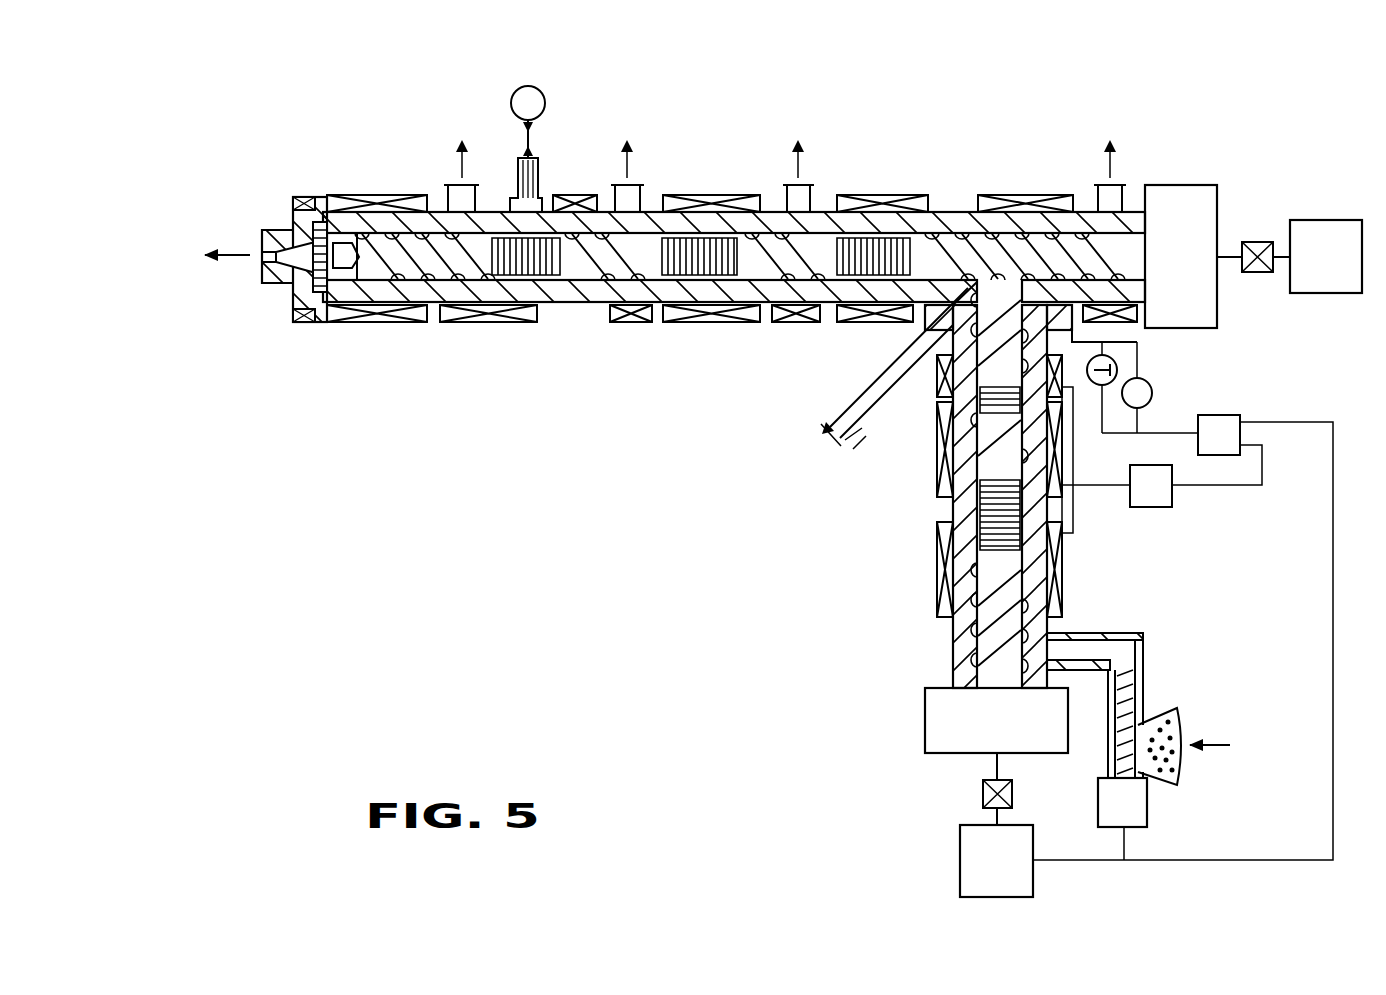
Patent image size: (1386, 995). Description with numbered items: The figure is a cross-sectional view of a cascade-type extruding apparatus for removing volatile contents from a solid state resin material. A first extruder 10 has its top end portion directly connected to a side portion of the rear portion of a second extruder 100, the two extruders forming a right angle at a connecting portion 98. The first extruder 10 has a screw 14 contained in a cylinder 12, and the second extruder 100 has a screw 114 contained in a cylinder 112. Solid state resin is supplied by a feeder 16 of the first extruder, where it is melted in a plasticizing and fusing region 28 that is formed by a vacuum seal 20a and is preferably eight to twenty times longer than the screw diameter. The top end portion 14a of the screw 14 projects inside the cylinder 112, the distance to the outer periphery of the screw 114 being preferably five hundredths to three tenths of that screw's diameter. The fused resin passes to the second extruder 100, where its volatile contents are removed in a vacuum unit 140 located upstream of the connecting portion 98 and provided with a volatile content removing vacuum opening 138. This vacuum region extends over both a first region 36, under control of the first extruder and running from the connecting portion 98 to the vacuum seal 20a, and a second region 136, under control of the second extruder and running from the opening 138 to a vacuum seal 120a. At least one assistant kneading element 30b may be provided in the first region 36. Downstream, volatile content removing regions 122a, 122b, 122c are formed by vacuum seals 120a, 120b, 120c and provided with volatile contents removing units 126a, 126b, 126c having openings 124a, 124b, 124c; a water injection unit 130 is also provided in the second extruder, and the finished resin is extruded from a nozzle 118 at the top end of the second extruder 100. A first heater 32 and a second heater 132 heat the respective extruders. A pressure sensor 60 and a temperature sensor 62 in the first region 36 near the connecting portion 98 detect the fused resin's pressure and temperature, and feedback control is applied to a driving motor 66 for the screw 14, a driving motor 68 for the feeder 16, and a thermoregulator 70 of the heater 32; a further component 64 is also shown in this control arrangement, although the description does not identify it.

The first extruder 10 is at (816, 614).
The cylinder 12 is at (955, 630).
The screw 14 is at (975, 634).
The top end portion 14a is at (1004, 232).
The feeder 16 is at (1197, 704).
The vacuum seal 20a is at (1024, 540).
The plasticizing and fusing region 28 is at (1048, 578).
The assistant kneading element 30b is at (966, 430).
The first heater 32 is at (945, 545).
The first region 36 is at (1068, 318).
The pressure sensor 60 is at (1153, 393).
The temperature sensor 62 is at (1096, 384).
The controller 64 is at (1226, 417).
The driving motor 66 is at (975, 848).
The driving motor 68 is at (1148, 817).
The thermoregulator 70 is at (1165, 500).
The connecting portion 98 is at (894, 368).
The second extruder 100 is at (855, 126).
The cylinder 112 is at (386, 291).
The screw 114 is at (348, 272).
The nozzle 118 is at (264, 208).
The vacuum seal 120a is at (873, 284).
The vacuum seal 120b is at (692, 282).
The vacuum seal 120c is at (526, 282).
The volatile content removing region 122a is at (776, 286).
The volatile content removing region 122b is at (598, 286).
The volatile content removing region 122c is at (440, 272).
The opening 124a is at (777, 195).
The opening 124b is at (654, 196).
The opening 124c is at (438, 196).
The volatile contents removing unit 126a is at (788, 172).
The volatile contents removing unit 126b is at (621, 180).
The volatile contents removing unit 126c is at (446, 180).
The water injection unit 130 is at (506, 138).
The second heater 132 is at (401, 322).
The second region 136 is at (1142, 214).
The volatile content removing vacuum opening 138 is at (1107, 210).
The vacuum unit 140 is at (1124, 163).